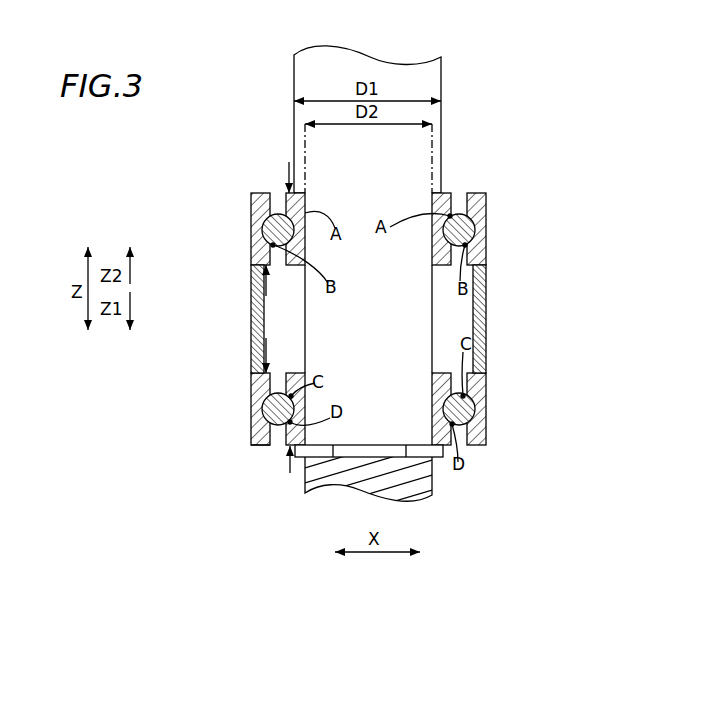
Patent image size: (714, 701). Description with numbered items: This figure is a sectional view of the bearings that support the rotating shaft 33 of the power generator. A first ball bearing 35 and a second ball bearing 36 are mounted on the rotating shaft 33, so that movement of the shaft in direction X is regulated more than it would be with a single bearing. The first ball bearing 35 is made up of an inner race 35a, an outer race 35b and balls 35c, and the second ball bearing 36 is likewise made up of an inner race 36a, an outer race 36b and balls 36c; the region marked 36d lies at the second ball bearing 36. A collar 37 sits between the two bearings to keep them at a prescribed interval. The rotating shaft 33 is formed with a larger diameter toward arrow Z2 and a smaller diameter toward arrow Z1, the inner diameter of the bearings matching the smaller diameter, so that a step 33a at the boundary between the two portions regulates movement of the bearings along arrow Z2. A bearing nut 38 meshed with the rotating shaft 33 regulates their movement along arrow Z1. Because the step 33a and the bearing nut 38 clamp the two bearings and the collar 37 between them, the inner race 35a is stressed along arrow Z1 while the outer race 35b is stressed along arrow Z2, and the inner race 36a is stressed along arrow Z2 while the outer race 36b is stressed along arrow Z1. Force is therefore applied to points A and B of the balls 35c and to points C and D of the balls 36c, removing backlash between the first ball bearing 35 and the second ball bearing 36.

The rotating shaft 33 is at (441, 156).
The step 33a is at (437, 193).
The first ball bearing 35 is at (325, 202).
The inner race 35a is at (288, 212).
The outer race 35b is at (251, 243).
The balls 35c is at (282, 214).
The second ball bearing 36 is at (325, 391).
The inner race 36a is at (292, 373).
The outer race 36b is at (251, 400).
The balls 36c is at (272, 394).
The end face of outer ring of second bearing 36d is at (252, 445).
The collar 37 is at (486, 308).
The bearing nut 38 is at (307, 480).